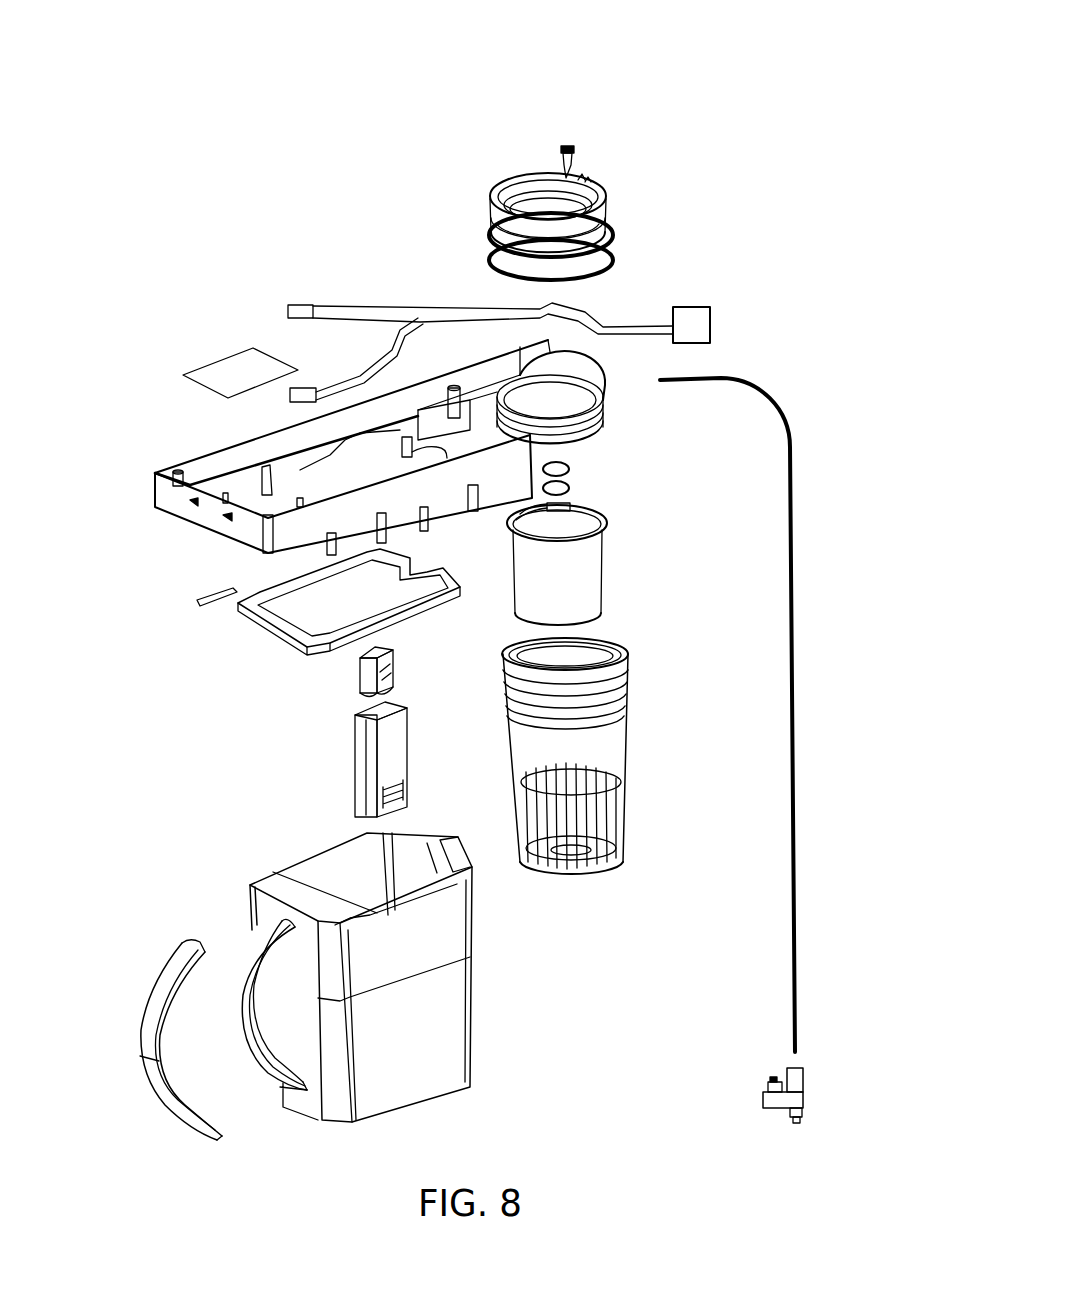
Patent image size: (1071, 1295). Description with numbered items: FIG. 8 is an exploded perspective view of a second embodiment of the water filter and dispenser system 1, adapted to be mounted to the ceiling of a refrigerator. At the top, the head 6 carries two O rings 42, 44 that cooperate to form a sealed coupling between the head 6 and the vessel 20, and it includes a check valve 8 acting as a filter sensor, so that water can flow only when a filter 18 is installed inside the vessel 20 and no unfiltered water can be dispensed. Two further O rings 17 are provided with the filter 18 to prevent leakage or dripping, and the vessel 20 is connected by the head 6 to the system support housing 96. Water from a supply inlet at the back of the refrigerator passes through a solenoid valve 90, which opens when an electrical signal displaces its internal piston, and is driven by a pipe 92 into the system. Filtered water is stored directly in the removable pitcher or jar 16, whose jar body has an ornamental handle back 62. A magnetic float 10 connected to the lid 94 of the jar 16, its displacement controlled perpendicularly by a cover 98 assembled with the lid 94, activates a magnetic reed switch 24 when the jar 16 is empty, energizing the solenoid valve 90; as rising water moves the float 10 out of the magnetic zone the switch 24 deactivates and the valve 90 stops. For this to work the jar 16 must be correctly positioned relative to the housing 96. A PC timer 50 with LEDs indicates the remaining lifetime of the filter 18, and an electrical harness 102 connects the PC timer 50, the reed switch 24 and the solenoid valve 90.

The water filter and dispenser system 1 is at (718, 122).
The head 6 is at (490, 177).
The check valve 8 is at (562, 148).
The O ring 42 is at (493, 228).
The O ring 44 is at (495, 268).
The electrical harness 102 is at (627, 312).
The PC timer 50 is at (225, 365).
The pipe 92 is at (750, 383).
The system support housing 96 is at (203, 465).
The O rings 17 is at (572, 470).
The magnetic reed switch 24 is at (200, 600).
The filter 18 is at (580, 570).
The magnetic float 10 is at (360, 672).
The lid 94 is at (263, 625).
The cover 98 is at (362, 745).
The vessel 20 is at (590, 747).
The jar 16 is at (232, 881).
The handle back 62 is at (145, 993).
The solenoid valve 90 is at (798, 1077).